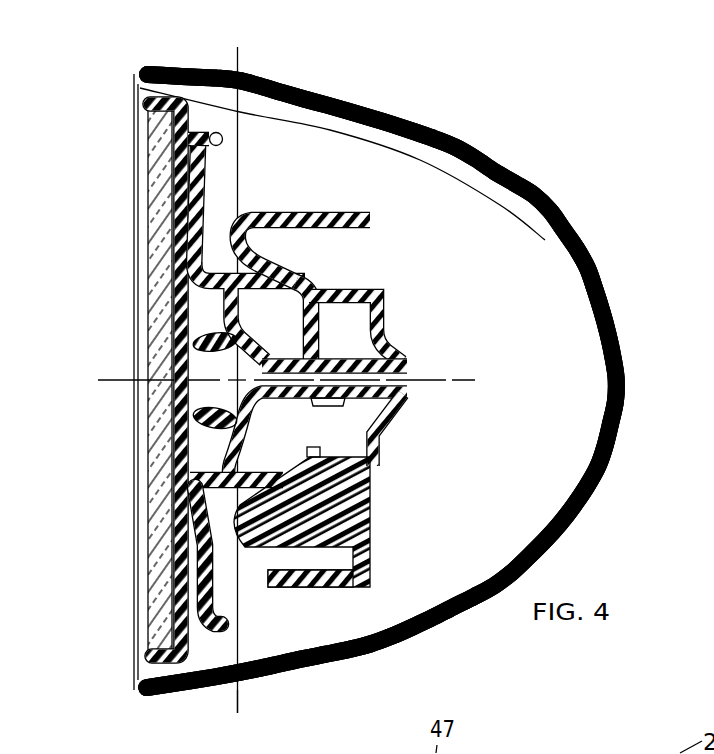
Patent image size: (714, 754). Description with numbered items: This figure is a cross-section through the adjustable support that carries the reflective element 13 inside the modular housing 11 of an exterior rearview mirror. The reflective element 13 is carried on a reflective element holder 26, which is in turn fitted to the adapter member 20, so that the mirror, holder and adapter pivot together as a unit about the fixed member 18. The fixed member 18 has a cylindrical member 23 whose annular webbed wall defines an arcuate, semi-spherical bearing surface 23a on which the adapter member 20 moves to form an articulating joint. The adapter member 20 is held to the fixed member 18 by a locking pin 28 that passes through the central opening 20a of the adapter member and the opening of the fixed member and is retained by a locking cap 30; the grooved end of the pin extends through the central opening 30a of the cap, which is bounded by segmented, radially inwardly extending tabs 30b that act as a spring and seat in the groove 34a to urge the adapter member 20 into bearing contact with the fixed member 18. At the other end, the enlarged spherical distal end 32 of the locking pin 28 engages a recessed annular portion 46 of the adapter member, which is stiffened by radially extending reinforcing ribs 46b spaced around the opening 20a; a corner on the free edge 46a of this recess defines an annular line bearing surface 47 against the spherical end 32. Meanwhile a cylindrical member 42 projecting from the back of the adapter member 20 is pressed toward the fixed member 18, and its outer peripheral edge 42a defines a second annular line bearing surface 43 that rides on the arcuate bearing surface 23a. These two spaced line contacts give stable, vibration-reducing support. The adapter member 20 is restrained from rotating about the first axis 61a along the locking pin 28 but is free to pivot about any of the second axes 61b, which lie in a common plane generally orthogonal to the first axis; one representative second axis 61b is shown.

The modular housing 11 is at (334, 78).
The reflective element 13 is at (148, 133).
The fixed member 18 is at (352, 198).
The adapter member 20 is at (209, 113).
The cylindrical member 23 is at (280, 212).
The arcuate bearing surface 23a is at (290, 290).
The reflective element holder 26 is at (175, 104).
The locking pin 28 is at (357, 348).
The locking cap 30 is at (388, 441).
The central opening 30a is at (410, 390).
The tabs 30b is at (390, 410).
The enlarged spherical distal end 32 is at (195, 422).
The groove 34a is at (398, 356).
The cylindrical member 42 is at (200, 492).
The outer peripheral edge 42a is at (257, 503).
The annular line bearing surface 43 is at (263, 560).
The recessed annular portion 46 is at (225, 305).
The free edge 46a is at (205, 352).
The annular line bearing surface 47 is at (278, 402).
The first axis 61a is at (104, 379).
The second axes 61b is at (236, 698).
The central opening 20a is at (369, 742).
The reinforcing ribs 46b is at (528, 741).